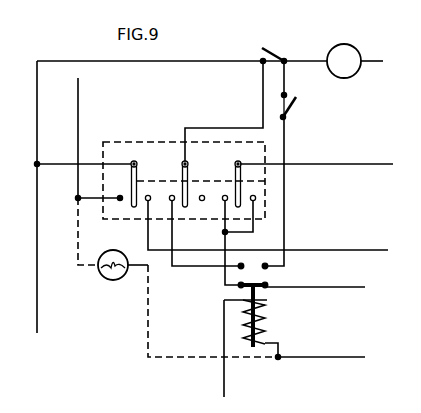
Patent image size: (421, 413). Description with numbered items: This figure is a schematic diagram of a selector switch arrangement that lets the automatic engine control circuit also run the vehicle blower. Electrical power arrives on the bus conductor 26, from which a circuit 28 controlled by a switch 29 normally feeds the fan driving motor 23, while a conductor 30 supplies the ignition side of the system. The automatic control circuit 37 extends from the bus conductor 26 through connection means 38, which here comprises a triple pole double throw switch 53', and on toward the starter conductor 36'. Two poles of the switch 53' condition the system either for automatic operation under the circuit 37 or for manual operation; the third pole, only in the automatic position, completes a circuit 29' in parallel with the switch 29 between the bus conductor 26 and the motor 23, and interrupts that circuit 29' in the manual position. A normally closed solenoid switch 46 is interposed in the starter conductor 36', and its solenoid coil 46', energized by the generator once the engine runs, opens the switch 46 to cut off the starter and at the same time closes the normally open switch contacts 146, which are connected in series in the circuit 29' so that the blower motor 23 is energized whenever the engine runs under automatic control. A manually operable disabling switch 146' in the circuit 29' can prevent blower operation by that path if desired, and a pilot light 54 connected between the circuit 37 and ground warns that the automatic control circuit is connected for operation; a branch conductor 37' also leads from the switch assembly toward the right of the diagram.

The fan driving motor 23 is at (340, 73).
The bus conductor 26 is at (37, 288).
The circuit 28 is at (310, 60).
The switch 29 is at (279, 64).
The circuit 29' is at (258, 97).
The conductor 30 is at (354, 240).
The starter conductor 36' is at (317, 303).
The control circuit 37 is at (98, 139).
The conductor 37' is at (316, 181).
The connection means 38 is at (214, 164).
The solenoid switch 46 is at (280, 308).
The solenoid coil 46' is at (274, 322).
The triple pole double throw switch 53' is at (280, 184).
The pilot light 54 is at (107, 280).
The switch contacts 146 is at (280, 193).
The manually operable disabling switch 146' is at (308, 111).